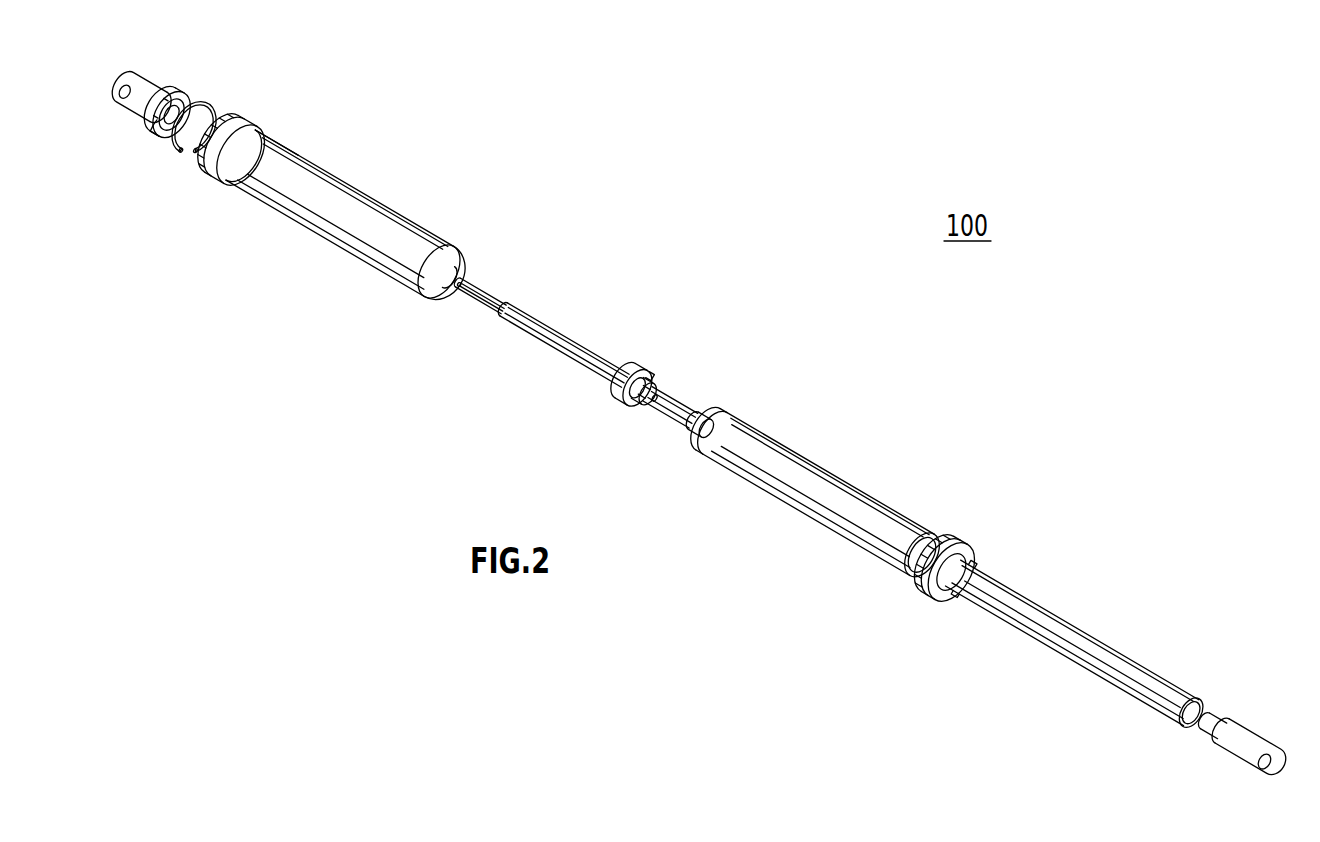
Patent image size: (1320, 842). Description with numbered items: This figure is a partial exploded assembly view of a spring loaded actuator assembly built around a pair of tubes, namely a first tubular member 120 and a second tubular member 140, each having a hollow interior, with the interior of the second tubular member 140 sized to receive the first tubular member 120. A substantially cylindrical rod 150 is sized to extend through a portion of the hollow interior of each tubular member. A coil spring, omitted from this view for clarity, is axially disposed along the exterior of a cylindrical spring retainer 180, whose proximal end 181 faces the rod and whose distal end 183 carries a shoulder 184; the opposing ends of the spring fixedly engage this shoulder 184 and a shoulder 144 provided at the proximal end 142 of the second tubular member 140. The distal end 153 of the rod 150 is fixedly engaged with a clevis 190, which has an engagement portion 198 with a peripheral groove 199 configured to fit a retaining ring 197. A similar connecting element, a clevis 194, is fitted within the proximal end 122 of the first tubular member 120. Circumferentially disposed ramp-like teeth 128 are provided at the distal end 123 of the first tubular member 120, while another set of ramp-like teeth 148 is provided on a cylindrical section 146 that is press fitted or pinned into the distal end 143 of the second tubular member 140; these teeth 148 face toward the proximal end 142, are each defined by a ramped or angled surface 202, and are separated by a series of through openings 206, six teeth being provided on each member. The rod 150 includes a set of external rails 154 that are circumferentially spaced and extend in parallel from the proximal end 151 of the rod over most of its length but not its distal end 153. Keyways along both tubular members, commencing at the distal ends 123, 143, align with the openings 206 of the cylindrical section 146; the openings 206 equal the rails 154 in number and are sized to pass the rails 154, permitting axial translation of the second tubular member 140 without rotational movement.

The first tubular member 120 is at (1052, 617).
The proximal end of first tubular member 122 is at (1187, 734).
The distal end of first tubular member 123 is at (973, 563).
The ramp-like teeth 128 is at (957, 595).
The second tubular member 140 is at (762, 493).
The proximal end of second tubular member 142 is at (907, 558).
The distal end of second tubular member 143 is at (723, 422).
The shoulder of second tubular member 144 is at (950, 540).
The cylindrical section 146 is at (636, 378).
The ramp-like teeth 148 is at (630, 403).
The substantially cylindrical rod 150 is at (500, 312).
The proximal end of rod 151 is at (683, 432).
The distal end of rod 153 is at (462, 293).
The external rails 154 is at (597, 352).
The spring retainer 180 is at (398, 230).
The proximal end of spring retainer 181 is at (455, 258).
The distal end of spring retainer 183 is at (265, 130).
The shoulder of spring retainer 184 is at (248, 118).
The clevis 190 is at (130, 115).
The clevis 194 is at (1238, 720).
The retaining ring 197 is at (209, 100).
The engagement portion 198 is at (178, 93).
The peripheral groove 199 is at (155, 133).
The ramped or angled surface 202 is at (657, 402).
The through openings 206 is at (655, 376).